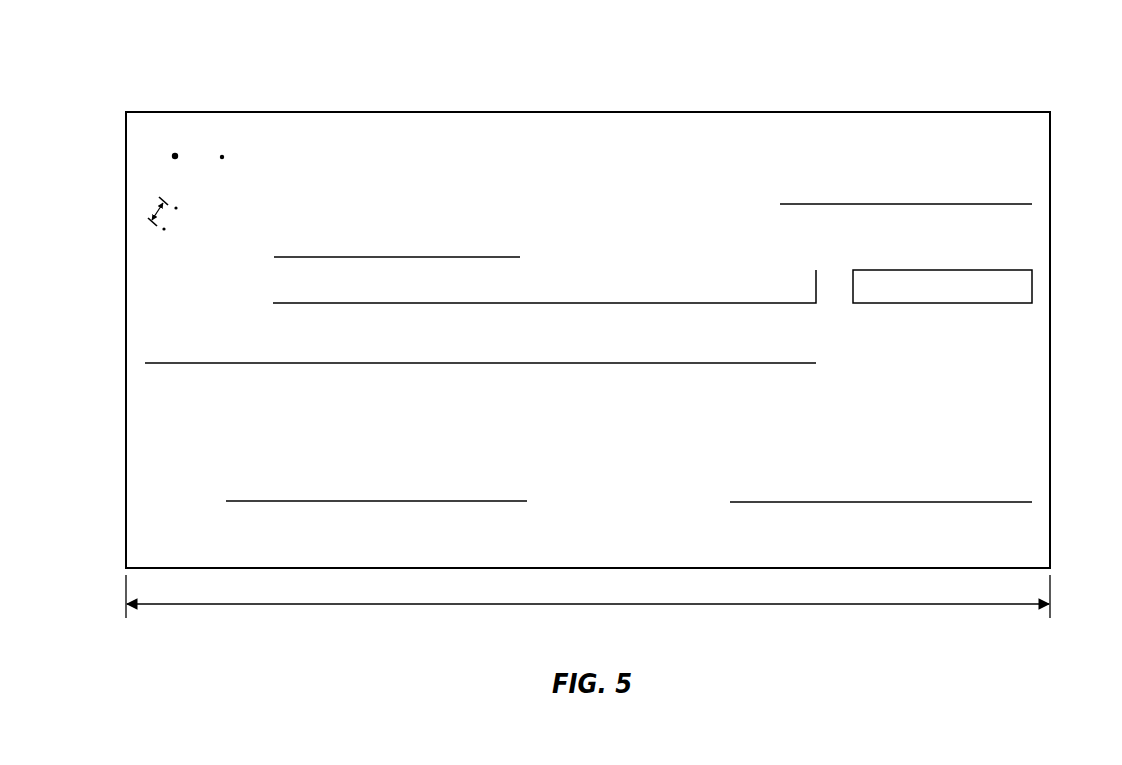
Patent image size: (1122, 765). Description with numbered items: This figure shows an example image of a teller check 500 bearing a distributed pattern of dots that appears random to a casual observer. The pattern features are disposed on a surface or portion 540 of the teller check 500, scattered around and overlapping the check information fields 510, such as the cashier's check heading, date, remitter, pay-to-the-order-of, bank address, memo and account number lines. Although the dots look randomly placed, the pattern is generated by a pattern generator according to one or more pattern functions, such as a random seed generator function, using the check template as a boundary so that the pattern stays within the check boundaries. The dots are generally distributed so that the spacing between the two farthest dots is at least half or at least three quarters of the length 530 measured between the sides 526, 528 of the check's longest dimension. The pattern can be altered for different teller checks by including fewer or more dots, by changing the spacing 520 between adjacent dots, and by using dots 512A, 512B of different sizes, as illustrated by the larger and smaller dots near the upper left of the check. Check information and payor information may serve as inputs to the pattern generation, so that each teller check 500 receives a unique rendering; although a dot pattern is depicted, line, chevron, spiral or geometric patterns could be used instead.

The teller check 500 is at (964, 58).
The check information fields 510 is at (554, 339).
The dot of a first size 512A is at (175, 152).
The dot of a second size 512B is at (223, 154).
The spacing between adjacent dots 520 is at (150, 211).
The side of the check 526 is at (126, 333).
The side of the check 528 is at (1050, 337).
The length 530 is at (590, 604).
The surface or portion of the teller check 540 is at (614, 122).